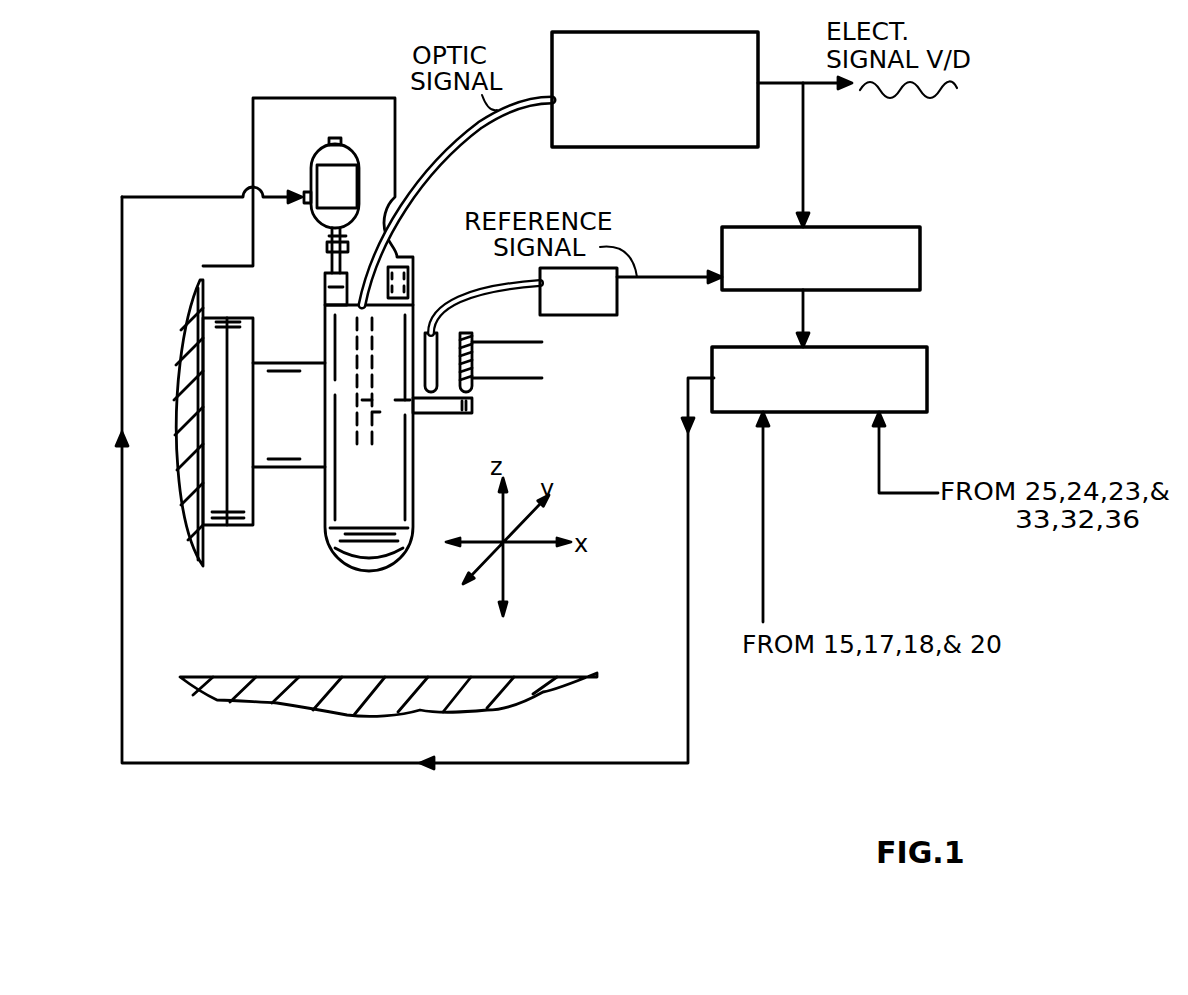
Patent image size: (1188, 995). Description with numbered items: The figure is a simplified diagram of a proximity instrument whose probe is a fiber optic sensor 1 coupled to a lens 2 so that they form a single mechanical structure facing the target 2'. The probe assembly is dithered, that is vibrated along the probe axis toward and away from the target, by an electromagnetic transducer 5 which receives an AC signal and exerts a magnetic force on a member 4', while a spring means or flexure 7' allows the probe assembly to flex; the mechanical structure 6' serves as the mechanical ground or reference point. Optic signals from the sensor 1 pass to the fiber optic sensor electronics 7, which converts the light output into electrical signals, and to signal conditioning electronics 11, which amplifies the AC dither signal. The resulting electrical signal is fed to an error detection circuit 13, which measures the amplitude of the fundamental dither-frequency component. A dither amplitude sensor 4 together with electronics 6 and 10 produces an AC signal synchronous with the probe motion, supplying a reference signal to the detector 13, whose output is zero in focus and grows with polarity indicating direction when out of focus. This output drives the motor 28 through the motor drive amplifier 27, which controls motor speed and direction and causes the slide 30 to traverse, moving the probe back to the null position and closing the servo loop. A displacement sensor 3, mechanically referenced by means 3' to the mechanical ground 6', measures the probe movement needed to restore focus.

The fiber optic sensor 1 is at (360, 407).
The lens 2 is at (353, 566).
The target 2' is at (388, 676).
The displacement sensor 3 is at (413, 276).
The mechanical reference means 3' is at (308, 201).
The dither amplitude sensor 4 is at (482, 337).
The member 4' is at (442, 426).
The electromagnetic transducer 5 is at (470, 326).
The dither amplitude sensor electronics 6 is at (578, 291).
The mechanical structure 6' is at (179, 405).
The fiber optic sensor electronics 7 is at (655, 89).
The flexure 7' is at (264, 402).
The dither amplitude sensor electronics 10 is at (607, 307).
The signal conditioning electronics 11 is at (692, 114).
The error detection circuit 13 is at (917, 268).
The motor drive amplifier 27 is at (915, 393).
The motor 28 is at (315, 165).
The slide 30 is at (215, 523).